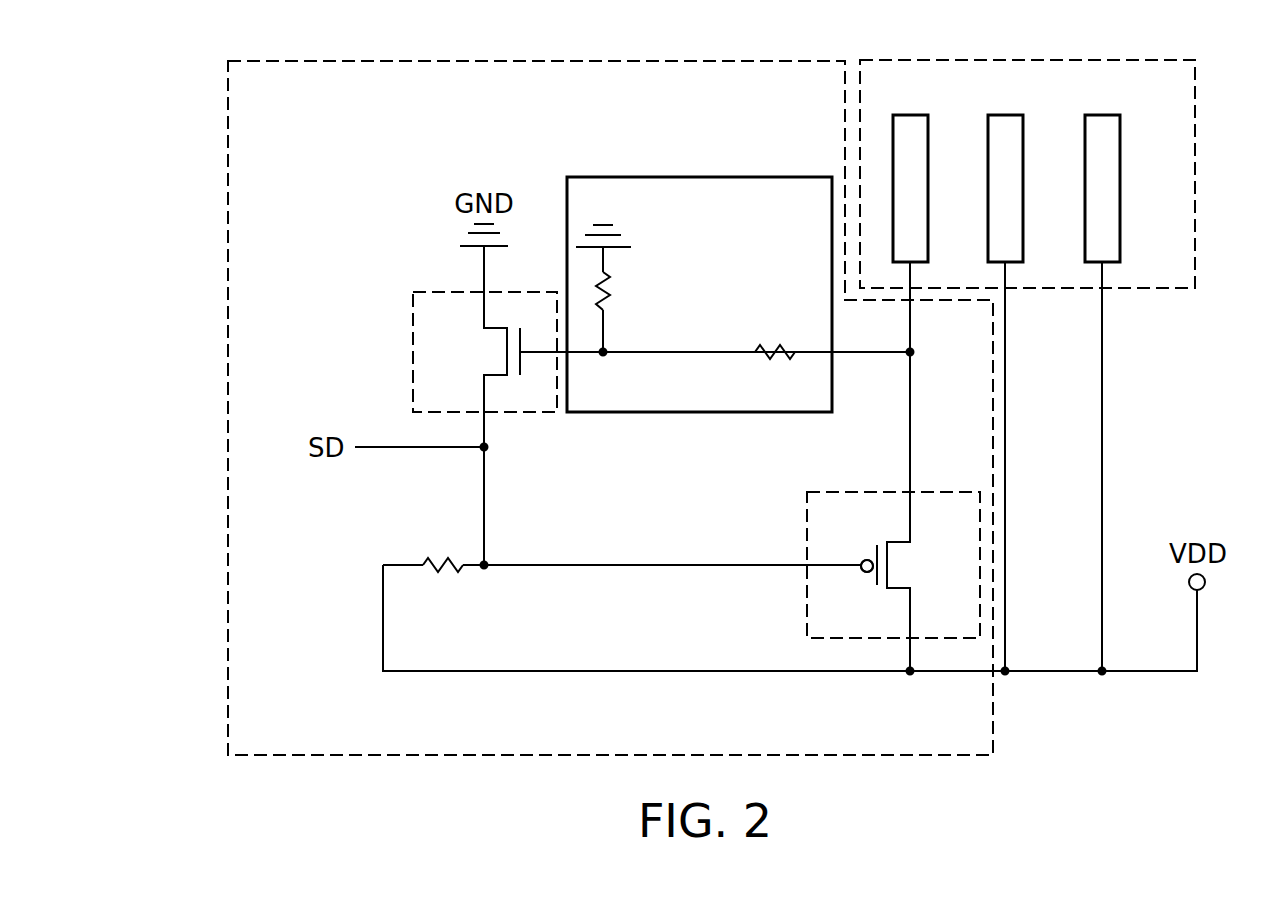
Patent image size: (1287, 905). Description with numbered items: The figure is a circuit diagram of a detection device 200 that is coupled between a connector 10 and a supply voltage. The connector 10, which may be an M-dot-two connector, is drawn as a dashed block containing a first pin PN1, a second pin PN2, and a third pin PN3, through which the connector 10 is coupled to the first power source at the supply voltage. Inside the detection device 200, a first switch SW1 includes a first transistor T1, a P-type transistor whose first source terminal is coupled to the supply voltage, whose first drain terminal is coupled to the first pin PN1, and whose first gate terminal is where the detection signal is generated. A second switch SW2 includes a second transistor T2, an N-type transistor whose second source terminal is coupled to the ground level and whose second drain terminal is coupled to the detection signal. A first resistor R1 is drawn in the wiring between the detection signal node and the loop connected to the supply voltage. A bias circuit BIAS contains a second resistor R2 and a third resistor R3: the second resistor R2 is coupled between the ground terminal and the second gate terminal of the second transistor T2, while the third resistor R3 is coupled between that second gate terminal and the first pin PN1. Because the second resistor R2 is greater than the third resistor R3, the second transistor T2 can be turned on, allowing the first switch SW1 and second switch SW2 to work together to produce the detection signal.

The detection device 200 is at (228, 152).
The connector 10 is at (1066, 174).
The first pin PN1 is at (910, 172).
The second pin PN2 is at (1005, 172).
The third pin PN3 is at (1102, 172).
The first switch SW1 is at (840, 565).
The second switch SW2 is at (431, 352).
The first transistor T1 is at (900, 567).
The second transistor T2 is at (498, 352).
The first resistor R1 is at (440, 558).
The second resistor R2 is at (608, 291).
The third resistor R3 is at (770, 345).
The bias circuit BIAS is at (699, 263).